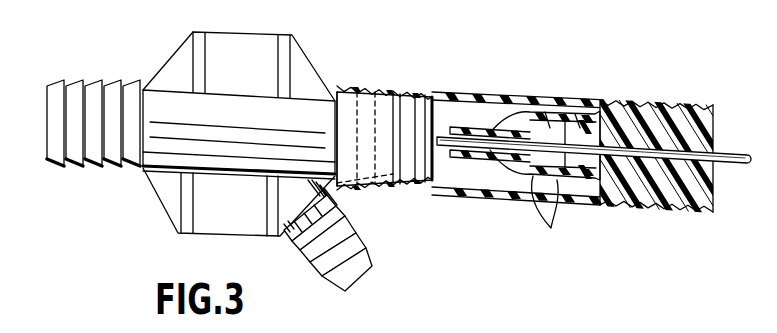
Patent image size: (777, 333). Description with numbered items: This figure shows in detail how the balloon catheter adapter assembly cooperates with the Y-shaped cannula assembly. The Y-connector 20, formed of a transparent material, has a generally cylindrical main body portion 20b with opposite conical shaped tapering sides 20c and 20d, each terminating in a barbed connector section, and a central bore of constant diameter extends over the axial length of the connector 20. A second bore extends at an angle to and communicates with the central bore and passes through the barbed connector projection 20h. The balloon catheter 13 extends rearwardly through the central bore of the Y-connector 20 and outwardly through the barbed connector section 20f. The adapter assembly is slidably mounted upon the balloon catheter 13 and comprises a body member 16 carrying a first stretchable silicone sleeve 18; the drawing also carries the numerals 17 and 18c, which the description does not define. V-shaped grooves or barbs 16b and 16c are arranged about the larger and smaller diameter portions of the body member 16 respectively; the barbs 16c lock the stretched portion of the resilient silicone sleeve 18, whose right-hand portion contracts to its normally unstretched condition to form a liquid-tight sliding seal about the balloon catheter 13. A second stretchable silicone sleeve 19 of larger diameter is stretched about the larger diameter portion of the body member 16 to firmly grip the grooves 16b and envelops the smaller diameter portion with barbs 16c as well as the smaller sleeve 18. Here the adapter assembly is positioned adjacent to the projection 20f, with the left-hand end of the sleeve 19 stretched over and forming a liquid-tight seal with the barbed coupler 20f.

The balloon catheter 13 is at (604, 154).
The body member 16 is at (712, 130).
The V-shaped grooves or barbs 16b is at (652, 207).
The V-shaped grooves or barbs 16c is at (551, 228).
The outer jacket 17 is at (653, 117).
The first stretchable silicone sleeve 18 is at (573, 117).
The inner conductor insulation 18c is at (467, 128).
The second stretchable silicone sleeve 19 is at (520, 93).
The Y-connector 20 is at (152, 21).
The main body portion 20b is at (258, 33).
The conical shaped tapering side 20c is at (168, 62).
The conical shaped tapering side 20d is at (312, 57).
The barbed connector section 20f is at (410, 96).
The barbed connector projection 20h is at (375, 255).